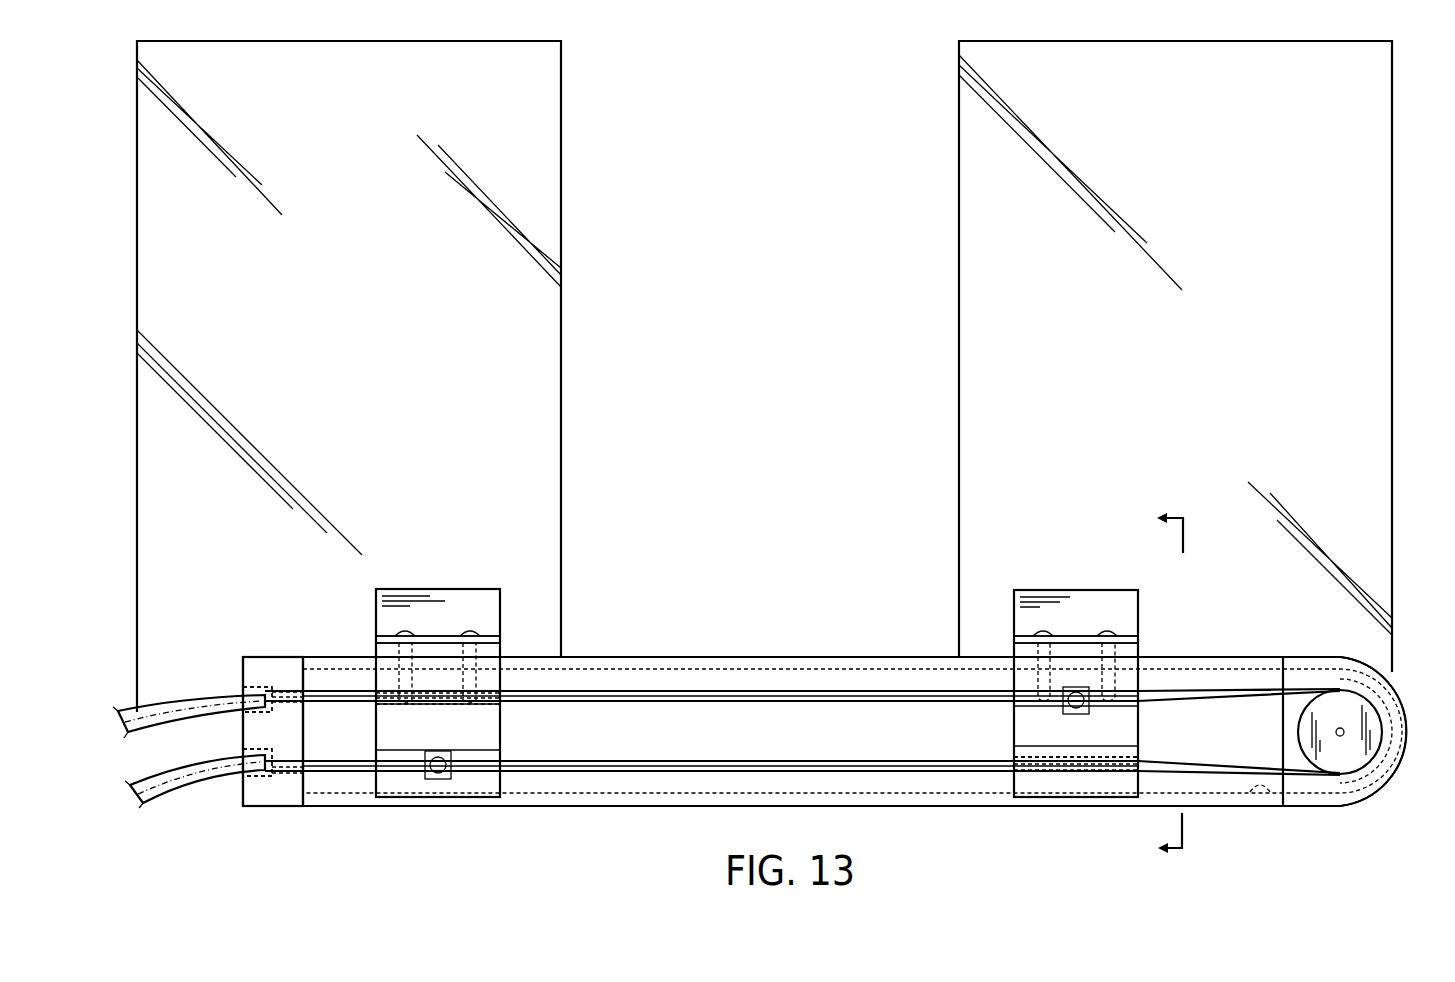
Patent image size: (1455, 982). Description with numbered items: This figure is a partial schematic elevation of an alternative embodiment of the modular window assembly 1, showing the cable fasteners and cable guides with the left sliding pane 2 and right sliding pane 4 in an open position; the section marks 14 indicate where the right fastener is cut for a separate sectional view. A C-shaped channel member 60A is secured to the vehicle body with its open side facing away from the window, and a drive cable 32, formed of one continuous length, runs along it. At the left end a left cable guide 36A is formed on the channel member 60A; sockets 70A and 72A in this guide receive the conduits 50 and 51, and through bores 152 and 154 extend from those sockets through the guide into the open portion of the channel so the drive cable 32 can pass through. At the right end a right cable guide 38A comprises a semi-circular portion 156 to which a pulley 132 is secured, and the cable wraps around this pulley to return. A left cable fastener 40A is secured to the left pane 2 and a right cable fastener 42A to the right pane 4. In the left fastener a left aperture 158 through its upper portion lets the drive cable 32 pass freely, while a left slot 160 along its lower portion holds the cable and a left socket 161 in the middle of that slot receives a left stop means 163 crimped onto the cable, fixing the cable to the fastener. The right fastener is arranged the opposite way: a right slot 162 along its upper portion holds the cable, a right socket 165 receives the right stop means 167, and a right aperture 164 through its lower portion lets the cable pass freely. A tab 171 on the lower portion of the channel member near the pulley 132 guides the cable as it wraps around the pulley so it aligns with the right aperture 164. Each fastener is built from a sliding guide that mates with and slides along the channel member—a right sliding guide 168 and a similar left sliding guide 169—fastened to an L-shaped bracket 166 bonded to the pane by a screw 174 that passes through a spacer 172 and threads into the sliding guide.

The modular window assembly 1 is at (734, 281).
The left sliding pane 2 is at (386, 304).
The right sliding pane 4 is at (1186, 405).
The section line 14 is at (1185, 685).
The drive cable 32 is at (668, 702).
The left cable guide 36A is at (252, 730).
The right cable guide 38A is at (1386, 802).
The left cable fastener 40A is at (432, 578).
The right cable fastener 42A is at (1060, 582).
The conduit 50 is at (162, 712).
The conduit 51 is at (160, 782).
The C-shaped channel member 60A is at (702, 657).
The socket 70A is at (243, 698).
The socket 72A is at (242, 772).
The pulley 132 is at (1303, 733).
The through bore 152 is at (286, 689).
The through bore 154 is at (284, 772).
The semi-circular portion 156 is at (1398, 698).
The left aperture 158 is at (432, 702).
The left slot 160 is at (393, 757).
The left socket 161 is at (432, 781).
The right slot 162 is at (1028, 706).
The left stop means 163 is at (441, 781).
The right aperture 164 is at (1083, 757).
The right socket 165 is at (1076, 712).
The L-shaped bracket 166 is at (489, 598).
The right stop means 167 is at (1082, 705).
The right sliding guide 168 is at (1020, 746).
The left sliding guide 169 is at (500, 738).
The tab 171 is at (1260, 793).
The spacer 172 is at (497, 656).
The screw 174 is at (471, 630).